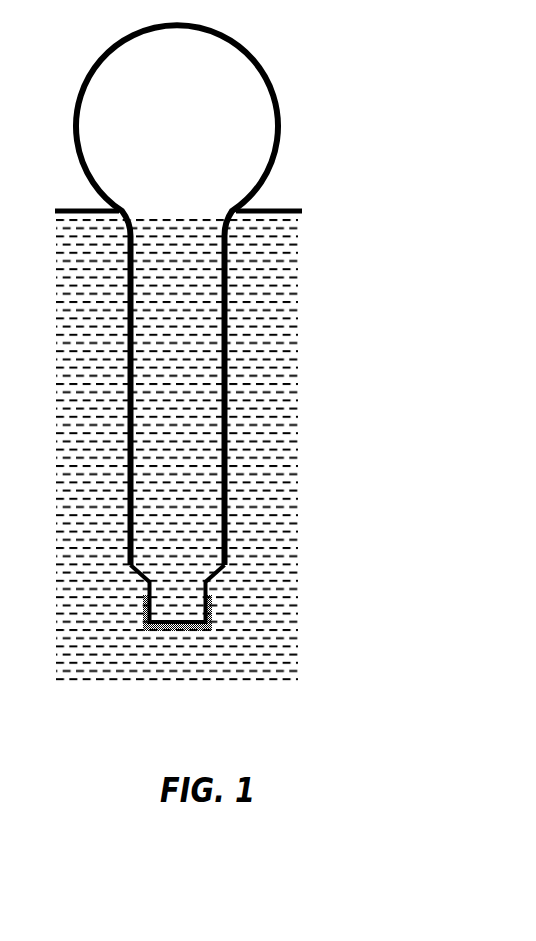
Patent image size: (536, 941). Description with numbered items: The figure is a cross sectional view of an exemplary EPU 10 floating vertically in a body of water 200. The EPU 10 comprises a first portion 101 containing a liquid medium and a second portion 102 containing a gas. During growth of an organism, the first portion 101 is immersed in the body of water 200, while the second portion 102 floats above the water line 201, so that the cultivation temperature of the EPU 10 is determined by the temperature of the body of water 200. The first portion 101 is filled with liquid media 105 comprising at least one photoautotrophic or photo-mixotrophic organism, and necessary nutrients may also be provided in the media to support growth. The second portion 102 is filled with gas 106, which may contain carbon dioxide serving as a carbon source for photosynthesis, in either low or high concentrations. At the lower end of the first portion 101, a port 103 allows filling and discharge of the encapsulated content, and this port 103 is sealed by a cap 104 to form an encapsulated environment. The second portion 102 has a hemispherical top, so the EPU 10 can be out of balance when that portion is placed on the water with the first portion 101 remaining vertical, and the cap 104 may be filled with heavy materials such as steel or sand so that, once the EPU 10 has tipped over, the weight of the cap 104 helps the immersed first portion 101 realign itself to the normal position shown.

The EPU 10 is at (267, 368).
The first portion 101 is at (227, 383).
The second portion 102 is at (263, 65).
The port 103 is at (218, 612).
The cap 104 is at (222, 636).
The liquid media 105 is at (176, 463).
The gas 106 is at (270, 128).
The body of water 200 is at (290, 300).
The water line 201 is at (290, 222).